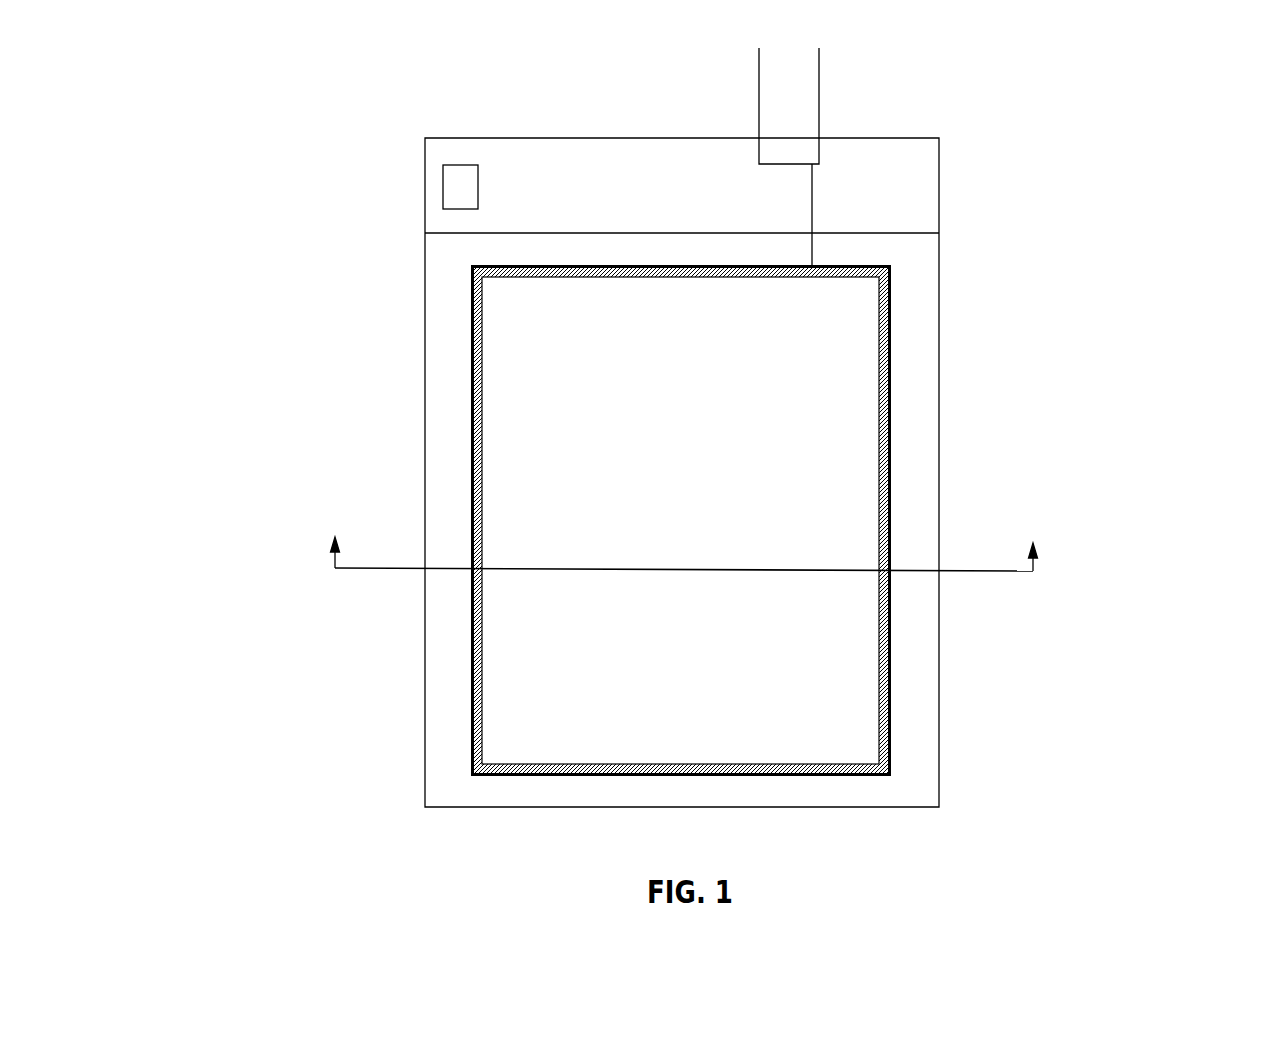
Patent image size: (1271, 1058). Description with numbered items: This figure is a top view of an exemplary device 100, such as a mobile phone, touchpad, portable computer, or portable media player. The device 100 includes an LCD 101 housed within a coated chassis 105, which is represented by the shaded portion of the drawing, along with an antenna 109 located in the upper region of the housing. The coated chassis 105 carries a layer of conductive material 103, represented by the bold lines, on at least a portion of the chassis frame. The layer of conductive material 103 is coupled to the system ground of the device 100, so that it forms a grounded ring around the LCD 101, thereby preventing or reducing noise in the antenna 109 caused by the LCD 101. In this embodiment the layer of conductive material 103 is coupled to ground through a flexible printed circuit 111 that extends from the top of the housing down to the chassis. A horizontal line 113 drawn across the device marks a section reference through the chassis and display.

The device 100 is at (311, 123).
The LCD 101 is at (680, 520).
The conductive material 103 is at (890, 456).
The coated chassis 105 is at (890, 381).
The antenna 109 is at (443, 190).
The flexible printed circuit 111 is at (819, 105).
The line 113 is at (334, 567).